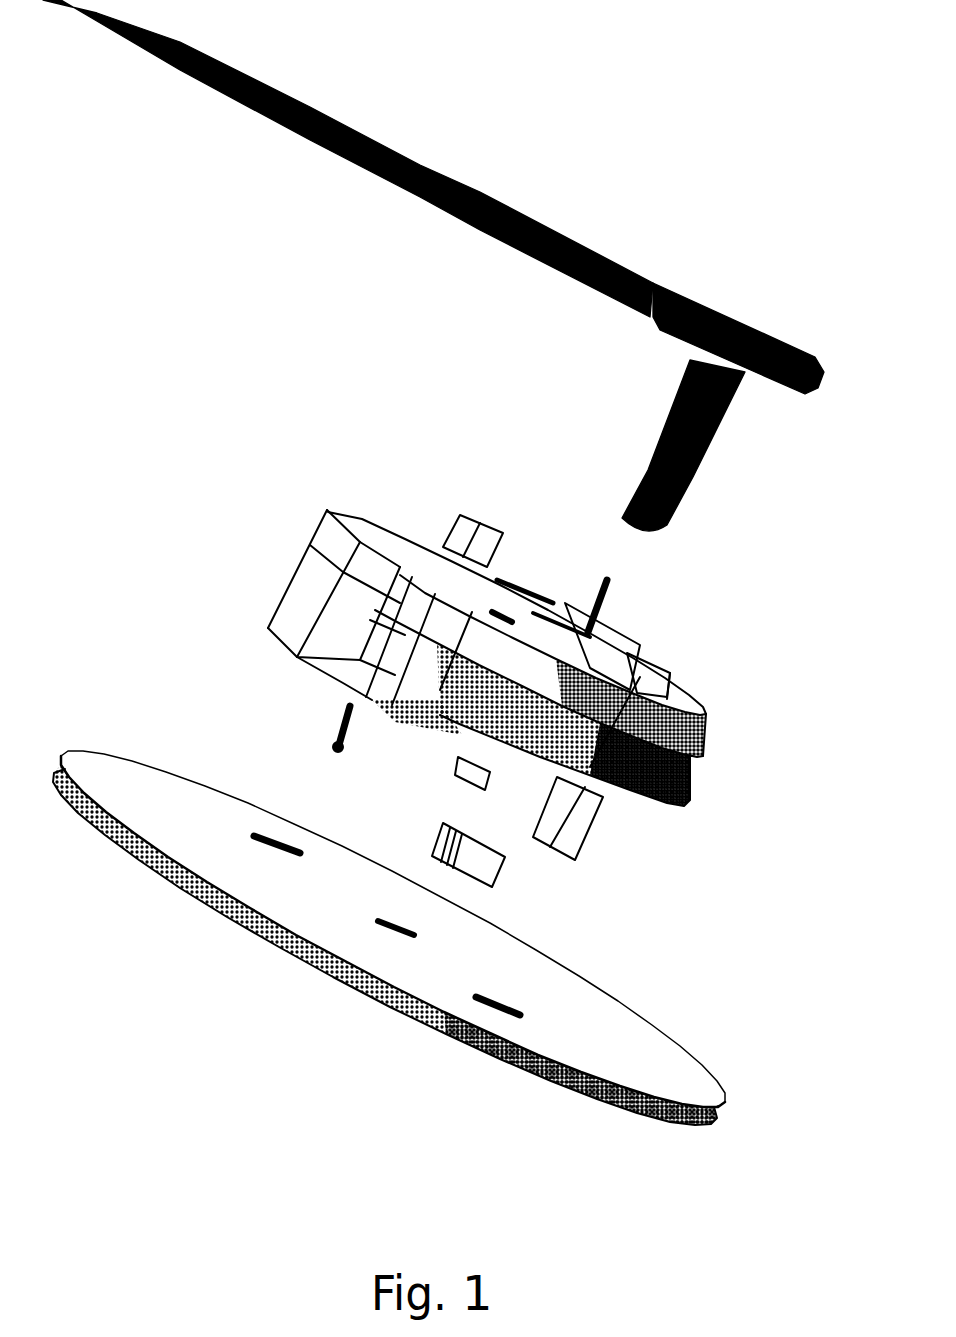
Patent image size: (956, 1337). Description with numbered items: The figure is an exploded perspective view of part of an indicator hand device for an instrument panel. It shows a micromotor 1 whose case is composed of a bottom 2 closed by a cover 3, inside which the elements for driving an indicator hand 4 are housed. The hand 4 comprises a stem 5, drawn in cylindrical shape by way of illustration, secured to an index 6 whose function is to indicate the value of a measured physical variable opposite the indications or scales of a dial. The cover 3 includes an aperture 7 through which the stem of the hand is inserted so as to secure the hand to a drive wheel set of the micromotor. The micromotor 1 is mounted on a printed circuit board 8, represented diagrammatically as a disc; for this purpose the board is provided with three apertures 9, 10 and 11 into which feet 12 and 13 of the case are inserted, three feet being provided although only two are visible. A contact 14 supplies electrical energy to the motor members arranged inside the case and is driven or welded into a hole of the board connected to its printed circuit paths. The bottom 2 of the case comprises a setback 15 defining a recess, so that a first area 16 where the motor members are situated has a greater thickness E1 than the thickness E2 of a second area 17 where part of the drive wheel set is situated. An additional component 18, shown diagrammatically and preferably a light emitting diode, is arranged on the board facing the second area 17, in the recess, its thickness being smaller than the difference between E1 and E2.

The micromotor 1 is at (375, 475).
The bottom 2 is at (650, 788).
The cover 3 is at (683, 747).
The indicator hand 4 is at (782, 295).
The stem 5 is at (693, 473).
The index 6 is at (533, 226).
The aperture 7 is at (612, 632).
The printed circuit board 8 is at (700, 1080).
The aperture 9 is at (287, 828).
The aperture 10 is at (432, 927).
The aperture 11 is at (518, 992).
The foot 12 is at (580, 825).
The foot 13 is at (472, 770).
The contact 14 is at (338, 732).
The setback 15 is at (405, 710).
The first area 16 is at (282, 655).
The second area 17 is at (516, 800).
The additional component 18 is at (420, 842).
The thickness E1 is at (273, 480).
The thickness E2 is at (782, 753).